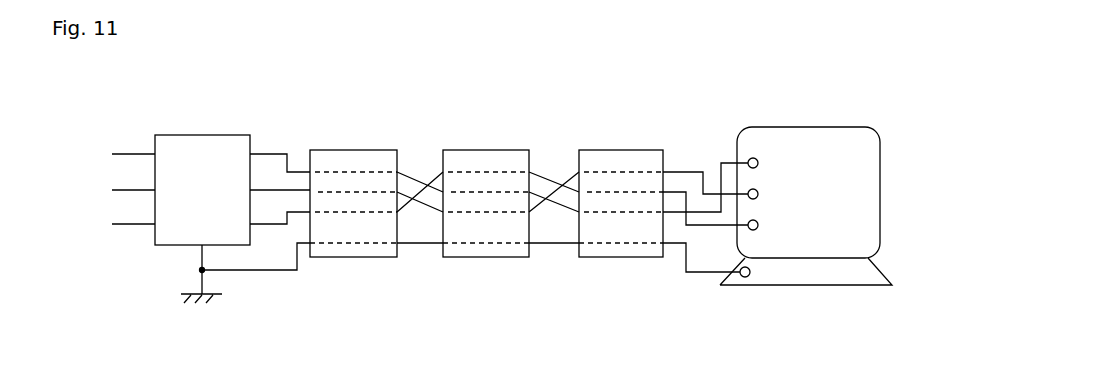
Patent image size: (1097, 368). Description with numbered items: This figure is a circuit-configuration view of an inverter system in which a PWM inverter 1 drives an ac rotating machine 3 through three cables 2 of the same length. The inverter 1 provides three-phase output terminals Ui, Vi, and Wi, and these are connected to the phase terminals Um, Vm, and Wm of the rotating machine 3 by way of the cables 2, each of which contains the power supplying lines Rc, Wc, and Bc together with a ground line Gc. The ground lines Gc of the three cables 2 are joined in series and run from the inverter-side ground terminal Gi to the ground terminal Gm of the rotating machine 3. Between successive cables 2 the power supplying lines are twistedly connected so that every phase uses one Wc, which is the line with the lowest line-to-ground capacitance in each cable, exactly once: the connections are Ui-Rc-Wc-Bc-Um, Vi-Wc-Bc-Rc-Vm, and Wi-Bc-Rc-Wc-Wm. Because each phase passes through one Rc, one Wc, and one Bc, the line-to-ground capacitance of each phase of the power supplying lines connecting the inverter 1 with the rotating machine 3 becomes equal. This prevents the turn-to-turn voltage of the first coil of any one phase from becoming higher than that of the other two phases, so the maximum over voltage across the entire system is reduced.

The PWM inverter 1 is at (175, 245).
The cable 2 is at (353, 257).
The ac rotating machine 3 is at (777, 228).
The controller ground terminal Gi is at (245, 280).
The ground line Gc is at (378, 243).
The power supplying line Rc is at (318, 172).
The power supplying line Wc is at (336, 192).
The power supplying line Bc is at (358, 212).
The phase terminal Um is at (774, 163).
The phase terminal Vm is at (774, 194).
The phase terminal Wm is at (776, 225).
The motor ground terminal Gm is at (764, 273).